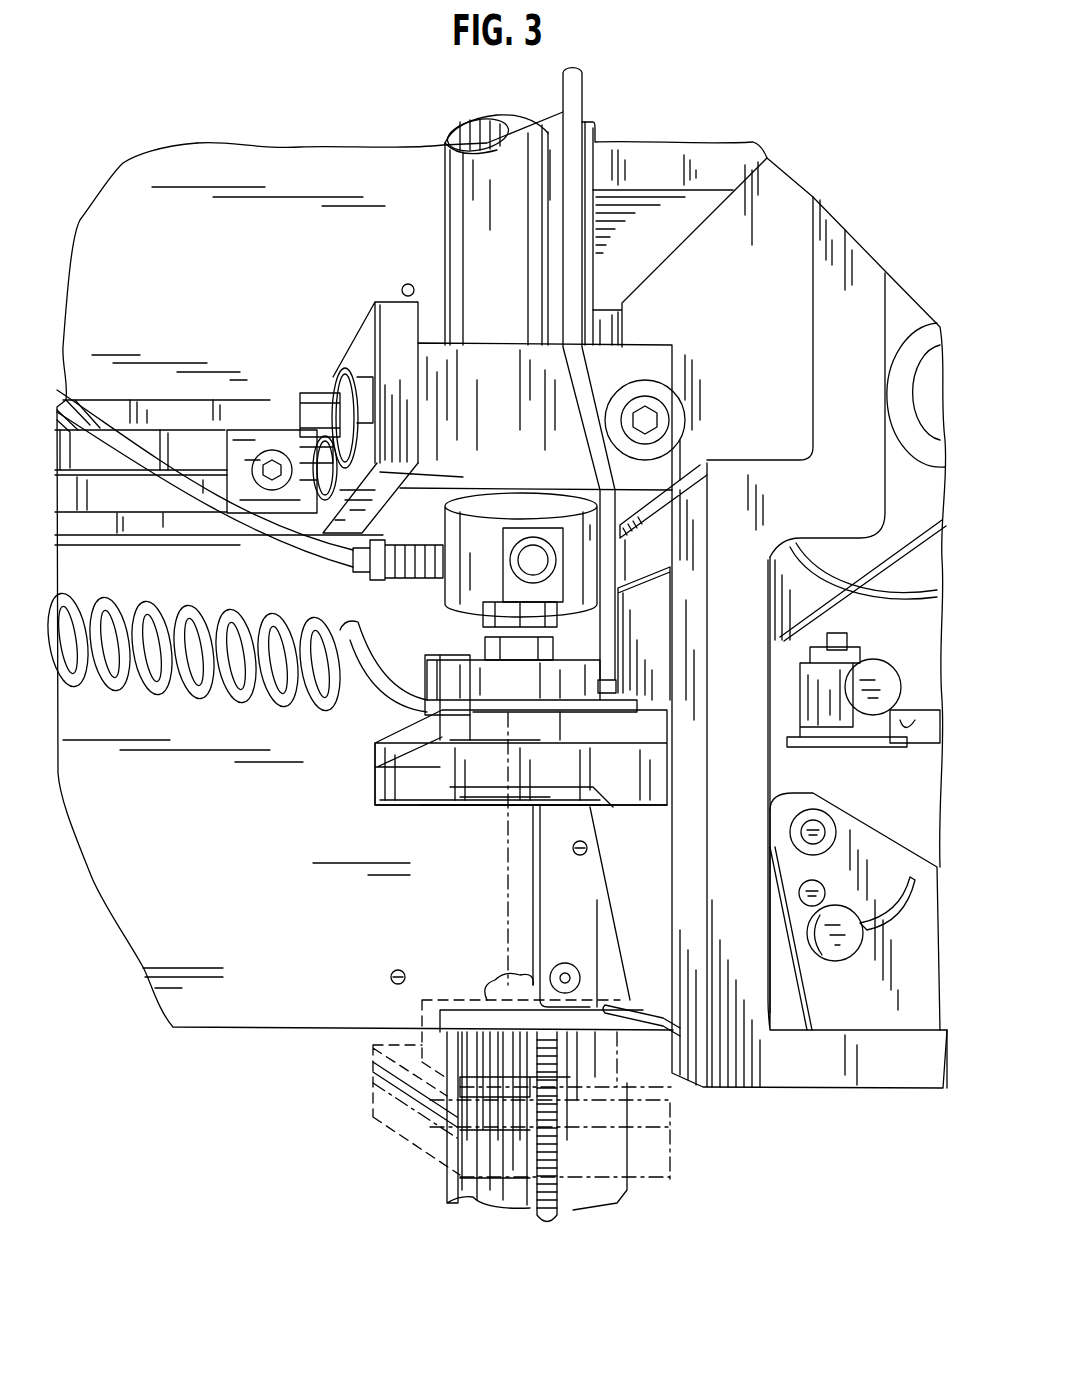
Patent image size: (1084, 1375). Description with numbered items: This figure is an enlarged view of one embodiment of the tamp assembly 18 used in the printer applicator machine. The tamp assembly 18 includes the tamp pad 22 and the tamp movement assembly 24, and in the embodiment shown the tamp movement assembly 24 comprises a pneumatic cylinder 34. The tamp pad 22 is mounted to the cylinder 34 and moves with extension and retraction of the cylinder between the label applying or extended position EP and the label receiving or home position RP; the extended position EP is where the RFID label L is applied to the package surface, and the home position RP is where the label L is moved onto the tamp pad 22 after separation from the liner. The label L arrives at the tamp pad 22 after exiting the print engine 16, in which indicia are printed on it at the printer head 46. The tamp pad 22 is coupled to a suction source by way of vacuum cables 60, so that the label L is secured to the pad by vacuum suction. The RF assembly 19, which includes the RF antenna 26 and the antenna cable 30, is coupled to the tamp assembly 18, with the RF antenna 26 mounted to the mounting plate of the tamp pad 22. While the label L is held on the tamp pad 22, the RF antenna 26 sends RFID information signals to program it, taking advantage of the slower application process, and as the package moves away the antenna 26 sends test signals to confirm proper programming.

The print engine 16 is at (783, 1012).
The tamp assembly 18 is at (358, 750).
The RF assembly 19 is at (640, 677).
The tamp pad 22 is at (383, 790).
The tamp movement assembly 24 is at (433, 236).
The RF antenna 26 is at (383, 717).
The antenna cable 30 is at (582, 93).
The pneumatic cylinder 34 is at (452, 178).
The printer head 46 is at (777, 838).
The vacuum cables 60 is at (307, 548).
The RFID label L is at (450, 815).
The home position RP is at (365, 777).
The extended position EP is at (366, 1082).